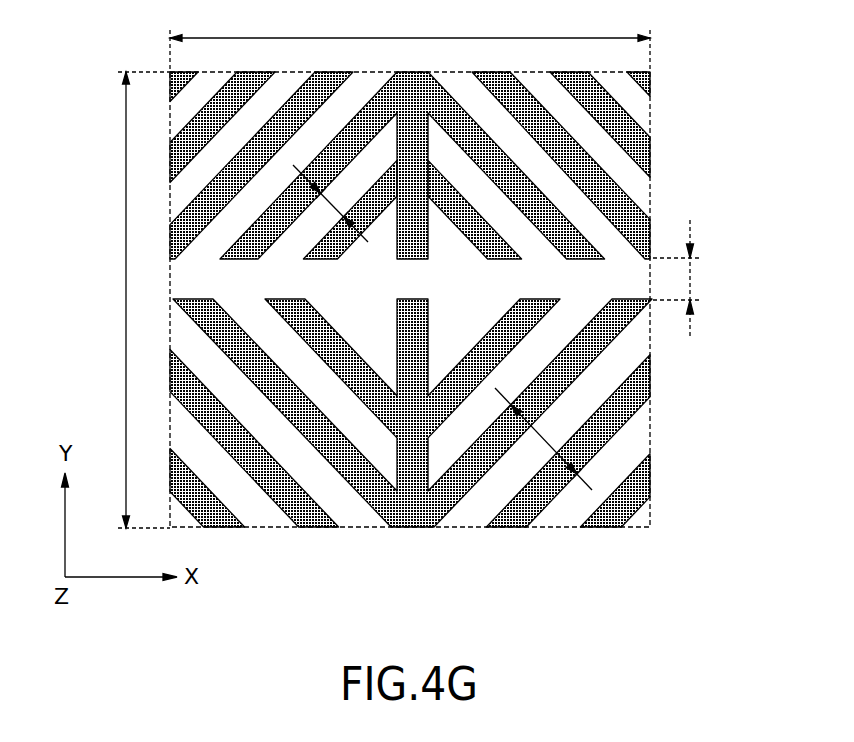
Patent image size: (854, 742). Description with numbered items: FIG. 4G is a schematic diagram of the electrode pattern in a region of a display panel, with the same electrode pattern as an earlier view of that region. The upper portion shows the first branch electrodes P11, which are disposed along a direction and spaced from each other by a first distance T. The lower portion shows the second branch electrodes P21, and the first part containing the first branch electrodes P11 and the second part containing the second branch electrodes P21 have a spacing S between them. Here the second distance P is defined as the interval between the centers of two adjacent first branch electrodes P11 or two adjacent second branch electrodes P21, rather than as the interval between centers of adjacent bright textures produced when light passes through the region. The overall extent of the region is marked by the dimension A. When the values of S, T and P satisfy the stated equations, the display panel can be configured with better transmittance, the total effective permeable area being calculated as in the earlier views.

The first branch electrodes P11 is at (562, 152).
The second branch electrodes P21 is at (608, 425).
The side length of unit cell A is at (375, 269).
The spacing S is at (676, 278).
The first distance T is at (330, 203).
The second distance P is at (543, 439).